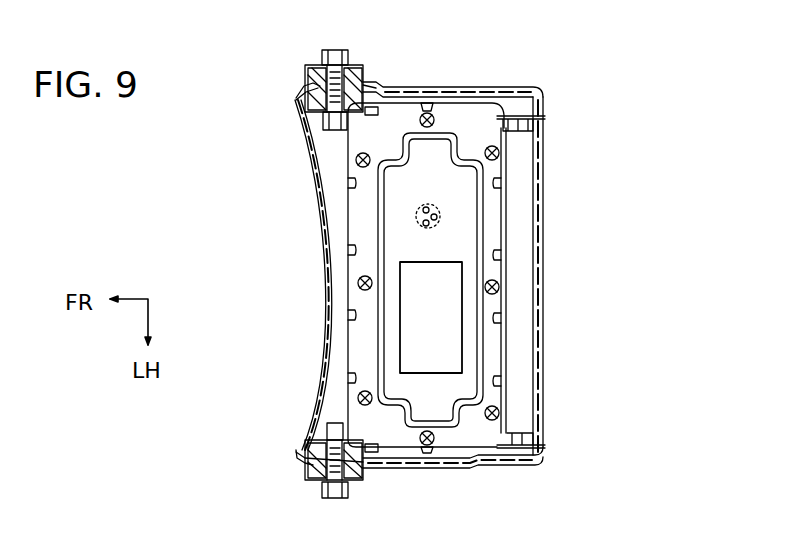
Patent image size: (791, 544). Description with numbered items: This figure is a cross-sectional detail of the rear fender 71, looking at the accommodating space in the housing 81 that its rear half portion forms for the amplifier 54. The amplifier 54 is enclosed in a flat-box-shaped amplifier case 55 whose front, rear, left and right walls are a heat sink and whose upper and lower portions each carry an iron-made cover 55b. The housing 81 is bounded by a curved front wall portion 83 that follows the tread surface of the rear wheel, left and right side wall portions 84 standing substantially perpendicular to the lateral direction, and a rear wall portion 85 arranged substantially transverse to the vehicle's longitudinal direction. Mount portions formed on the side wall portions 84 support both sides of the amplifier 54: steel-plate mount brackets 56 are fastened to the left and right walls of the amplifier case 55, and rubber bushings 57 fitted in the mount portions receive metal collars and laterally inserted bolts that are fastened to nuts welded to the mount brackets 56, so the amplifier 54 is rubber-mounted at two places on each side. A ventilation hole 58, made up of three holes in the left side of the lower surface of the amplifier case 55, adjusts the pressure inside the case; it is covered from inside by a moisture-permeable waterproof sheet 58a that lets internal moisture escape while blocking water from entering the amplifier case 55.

The amplifier case 55 is at (519, 278).
The amplifier 54 is at (519, 278).
The cover 55b is at (498, 358).
The mount bracket 56 is at (540, 100).
The rubber bushing 57 is at (358, 90).
The ventilation hole 58 is at (434, 218).
The moisture-permeable waterproof sheet 58a is at (440, 222).
The housing 81 is at (530, 275).
The rear fender 71 is at (530, 275).
The front wall portion 83 is at (328, 325).
The side wall portion 84 is at (309, 92).
The rear wall portion 85 is at (548, 278).